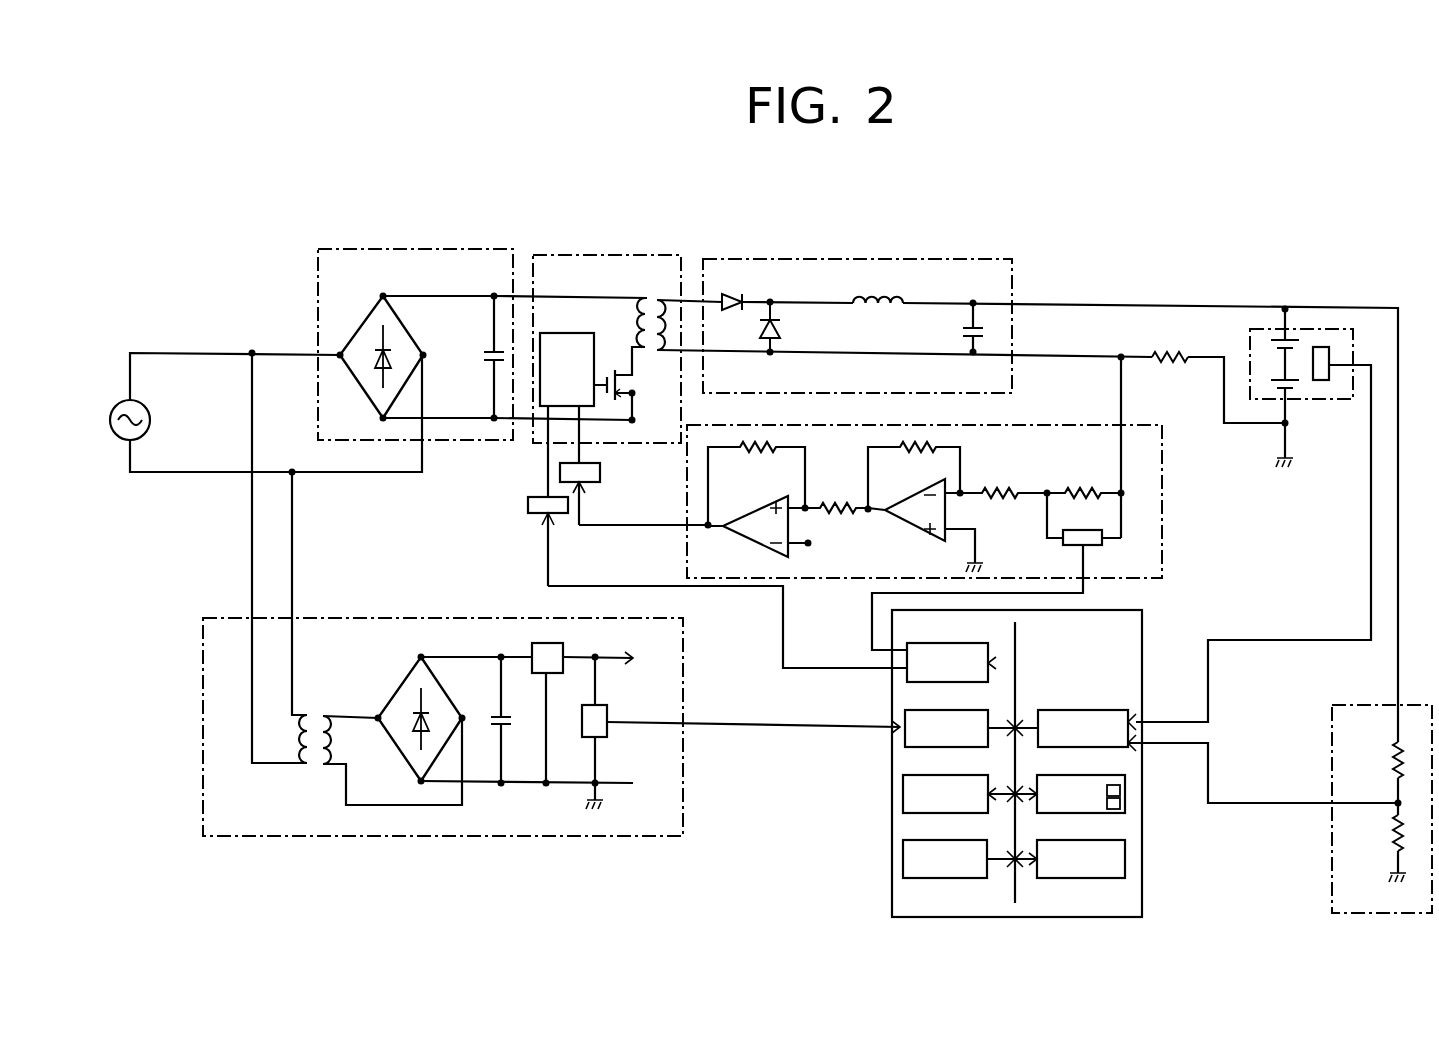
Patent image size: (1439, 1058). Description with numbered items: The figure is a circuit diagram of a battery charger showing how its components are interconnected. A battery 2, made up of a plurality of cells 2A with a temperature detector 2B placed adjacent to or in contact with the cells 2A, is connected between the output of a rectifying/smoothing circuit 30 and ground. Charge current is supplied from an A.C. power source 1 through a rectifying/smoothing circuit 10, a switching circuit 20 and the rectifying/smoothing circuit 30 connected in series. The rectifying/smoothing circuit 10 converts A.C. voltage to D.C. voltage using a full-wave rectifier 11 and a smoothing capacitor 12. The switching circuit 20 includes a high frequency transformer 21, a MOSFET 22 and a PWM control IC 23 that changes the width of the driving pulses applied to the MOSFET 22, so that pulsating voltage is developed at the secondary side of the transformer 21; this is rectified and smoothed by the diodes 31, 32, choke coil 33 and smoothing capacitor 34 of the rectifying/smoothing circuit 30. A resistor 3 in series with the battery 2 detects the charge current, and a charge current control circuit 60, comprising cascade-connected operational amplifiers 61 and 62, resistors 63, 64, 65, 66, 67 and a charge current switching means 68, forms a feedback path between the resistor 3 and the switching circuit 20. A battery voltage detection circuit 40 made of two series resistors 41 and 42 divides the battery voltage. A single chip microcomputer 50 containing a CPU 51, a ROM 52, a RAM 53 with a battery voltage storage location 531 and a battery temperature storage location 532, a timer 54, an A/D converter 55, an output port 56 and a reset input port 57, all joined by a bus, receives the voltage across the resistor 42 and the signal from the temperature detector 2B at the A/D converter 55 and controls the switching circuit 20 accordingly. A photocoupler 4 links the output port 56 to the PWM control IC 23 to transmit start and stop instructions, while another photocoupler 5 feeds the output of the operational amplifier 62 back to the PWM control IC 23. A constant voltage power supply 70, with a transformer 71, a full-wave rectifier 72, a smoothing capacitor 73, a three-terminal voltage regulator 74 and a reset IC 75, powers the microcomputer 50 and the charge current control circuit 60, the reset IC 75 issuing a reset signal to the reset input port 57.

The A.C. power source 1 is at (150, 418).
The battery 2 is at (1262, 328).
The cells 2A is at (1292, 340).
The temperature detector 2B is at (1330, 353).
The resistor 3 is at (1178, 360).
The photocoupler 4 is at (528, 505).
The photocoupler 5 is at (590, 483).
The rectifying/smoothing circuit 10 is at (425, 248).
The full-wave rectifier 11 is at (365, 318).
The smoothing capacitor 12 is at (488, 357).
The switching circuit 20 is at (585, 248).
The high frequency transformer 21 is at (654, 302).
The MOSFET 22 is at (635, 383).
The PWM control IC 23 is at (575, 333).
The rectifying/smoothing circuit 30 is at (873, 247).
The diode 31 is at (735, 300).
The diode 32 is at (782, 330).
The choke coil 33 is at (875, 305).
The smoothing capacitor 34 is at (985, 331).
The battery voltage detection circuit 40 is at (1330, 736).
The resistor 41 is at (1390, 762).
The resistor 42 is at (1392, 836).
The single chip microcomputer 50 is at (1143, 650).
The CPU 51 is at (1118, 880).
The ROM 52 is at (912, 878).
The RAM 53 is at (1112, 813).
The battery voltage storage location 531 is at (1123, 790).
The battery temperature storage location 532 is at (1123, 803).
The timer 54 is at (910, 812).
The A/D converter 55 is at (1130, 713).
The output port 56 is at (912, 682).
The reset input port 57 is at (912, 747).
The charge current control circuit 60 is at (1163, 478).
The operational amplifier 61 is at (926, 535).
The operational amplifier 62 is at (758, 540).
The resistor 63 is at (1000, 488).
The resistor 64 is at (918, 450).
The resistor 65 is at (840, 500).
The resistor 66 is at (762, 450).
The resistor 67 is at (1085, 490).
The charge current switching means 68 is at (1098, 548).
The constant voltage power supply 70 is at (325, 838).
The transformer 71 is at (310, 715).
The full-wave rectifier 72 is at (392, 690).
The smoothing capacitor 73 is at (510, 724).
The three-terminal voltage regulator 74 is at (547, 643).
The reset IC 75 is at (607, 735).